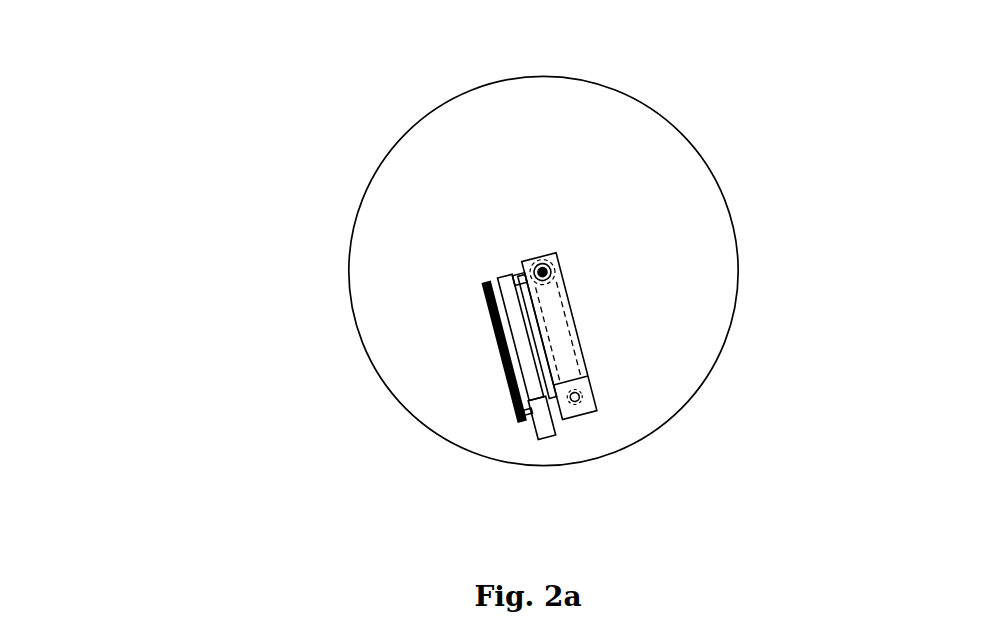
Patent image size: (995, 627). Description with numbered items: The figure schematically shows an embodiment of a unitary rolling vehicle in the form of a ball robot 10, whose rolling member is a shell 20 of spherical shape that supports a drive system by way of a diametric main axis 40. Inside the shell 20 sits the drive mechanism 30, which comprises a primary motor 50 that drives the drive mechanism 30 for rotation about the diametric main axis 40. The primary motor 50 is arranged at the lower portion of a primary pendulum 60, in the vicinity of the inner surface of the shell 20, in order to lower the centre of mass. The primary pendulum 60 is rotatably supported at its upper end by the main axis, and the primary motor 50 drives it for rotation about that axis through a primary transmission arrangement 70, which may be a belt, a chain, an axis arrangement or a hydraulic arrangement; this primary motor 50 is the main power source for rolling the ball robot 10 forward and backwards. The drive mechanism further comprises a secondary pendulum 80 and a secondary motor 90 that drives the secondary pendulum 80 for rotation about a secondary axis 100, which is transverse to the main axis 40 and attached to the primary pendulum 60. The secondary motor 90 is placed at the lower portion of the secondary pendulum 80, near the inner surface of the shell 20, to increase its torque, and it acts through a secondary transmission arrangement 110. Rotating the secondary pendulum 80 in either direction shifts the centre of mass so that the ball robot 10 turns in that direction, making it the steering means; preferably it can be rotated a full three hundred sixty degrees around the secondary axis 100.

The ball robot 10 is at (222, 122).
The shell 20 is at (540, 75).
The drive mechanism 30 is at (647, 235).
The diametric main axis 40 is at (520, 269).
The primary motor 50 is at (583, 407).
The primary pendulum 60 is at (588, 370).
The primary transmission arrangement 70 is at (577, 339).
The secondary pendulum 80 is at (548, 438).
The secondary motor 90 is at (528, 425).
The secondary axis 100 is at (497, 293).
The secondary transmission arrangement 110 is at (500, 357).